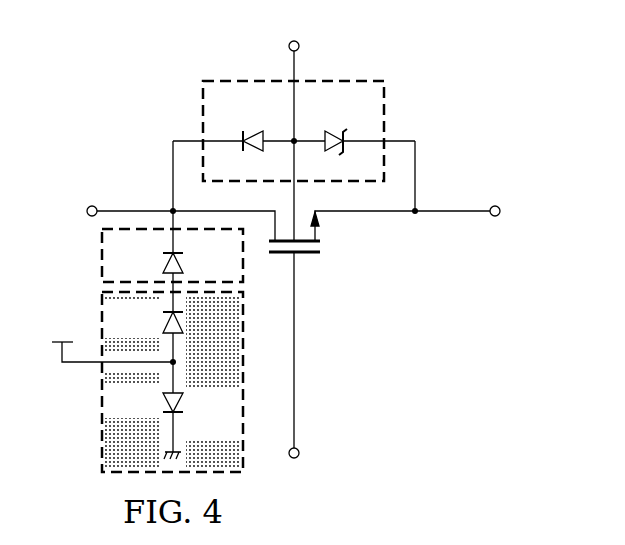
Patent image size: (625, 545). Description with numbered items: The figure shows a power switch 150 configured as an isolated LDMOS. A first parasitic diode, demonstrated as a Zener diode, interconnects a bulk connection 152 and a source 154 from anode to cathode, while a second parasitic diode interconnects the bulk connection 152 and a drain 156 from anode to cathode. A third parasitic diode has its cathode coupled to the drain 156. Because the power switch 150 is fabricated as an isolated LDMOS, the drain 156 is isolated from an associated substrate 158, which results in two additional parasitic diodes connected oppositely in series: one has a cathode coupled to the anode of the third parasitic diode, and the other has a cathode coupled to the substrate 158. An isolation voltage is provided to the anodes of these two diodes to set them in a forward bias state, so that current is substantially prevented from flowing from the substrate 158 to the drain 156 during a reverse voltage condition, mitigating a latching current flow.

The power switch 150 is at (158, 65).
The bulk connection 152 is at (293, 70).
The source 154 is at (455, 211).
The drain 156 is at (133, 210).
The substrate 158 is at (192, 433).